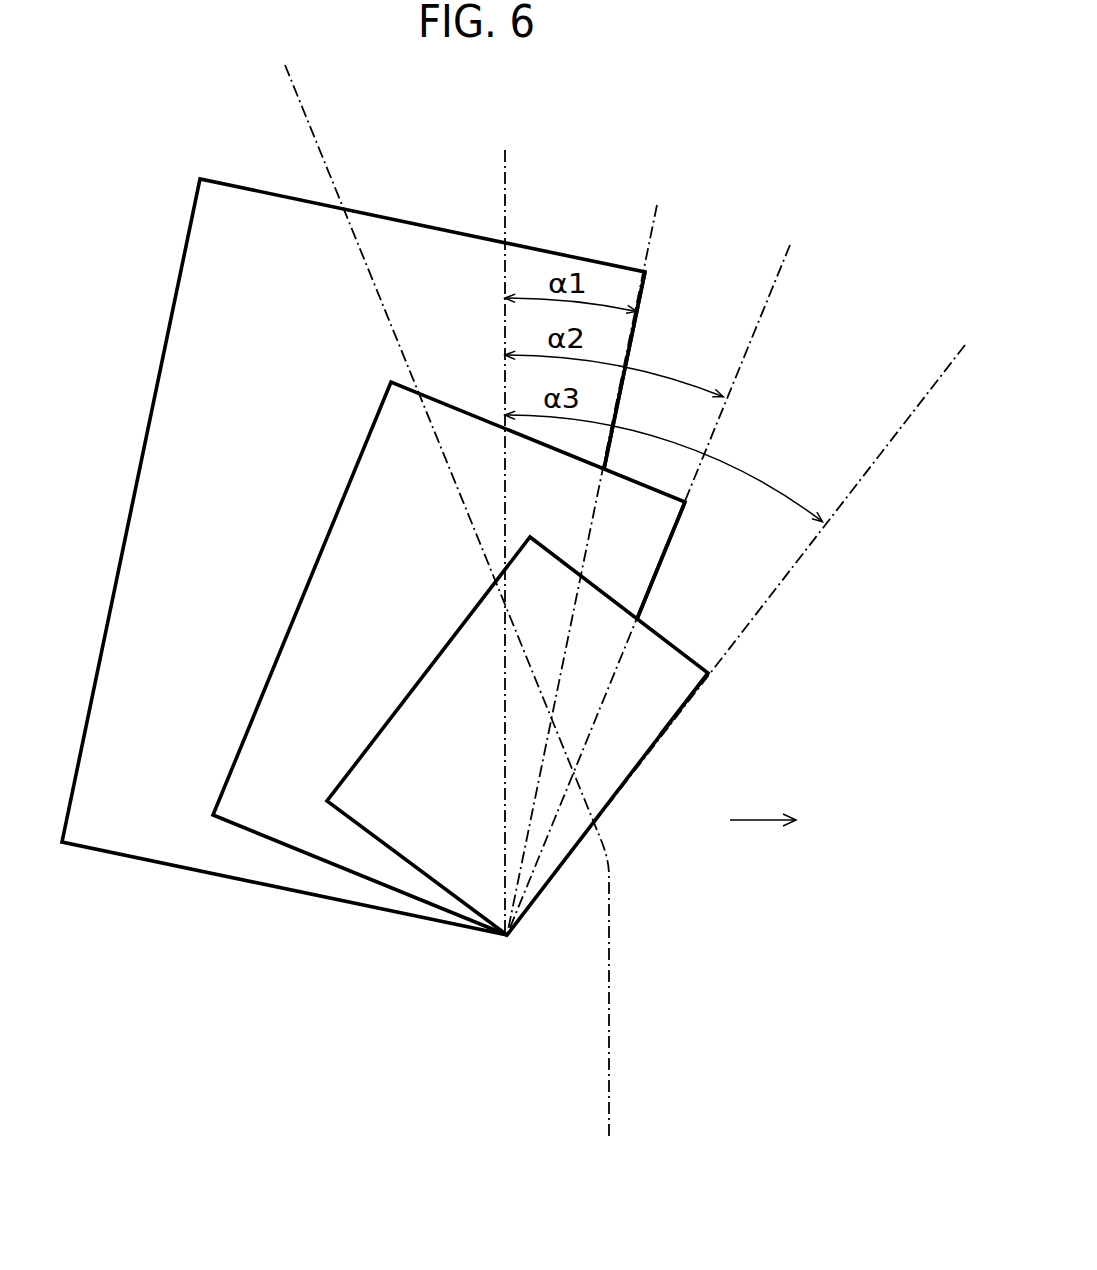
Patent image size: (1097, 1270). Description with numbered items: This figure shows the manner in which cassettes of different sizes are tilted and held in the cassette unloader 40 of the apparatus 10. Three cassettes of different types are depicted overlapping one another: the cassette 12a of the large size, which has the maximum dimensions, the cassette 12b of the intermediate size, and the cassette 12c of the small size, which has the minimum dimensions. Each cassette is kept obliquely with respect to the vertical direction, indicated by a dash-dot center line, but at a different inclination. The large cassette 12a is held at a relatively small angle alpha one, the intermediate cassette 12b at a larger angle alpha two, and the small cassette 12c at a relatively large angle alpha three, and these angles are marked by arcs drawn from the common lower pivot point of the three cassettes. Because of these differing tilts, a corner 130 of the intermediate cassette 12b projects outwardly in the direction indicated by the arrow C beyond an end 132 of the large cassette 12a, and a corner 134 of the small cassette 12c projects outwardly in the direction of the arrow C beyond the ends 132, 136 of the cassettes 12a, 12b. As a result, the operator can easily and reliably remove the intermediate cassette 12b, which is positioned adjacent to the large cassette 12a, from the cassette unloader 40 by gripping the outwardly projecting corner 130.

The image forming apparatus 10 is at (678, 121).
The cassette unloader 40 is at (513, 602).
The cassette of the large size 12a is at (392, 541).
The cassette of the intermediate size 12b is at (486, 658).
The cassette of the small size 12c is at (563, 736).
The corner 130 is at (688, 509).
The end 132 is at (633, 347).
The corner 134 is at (704, 676).
The end 136 is at (666, 560).